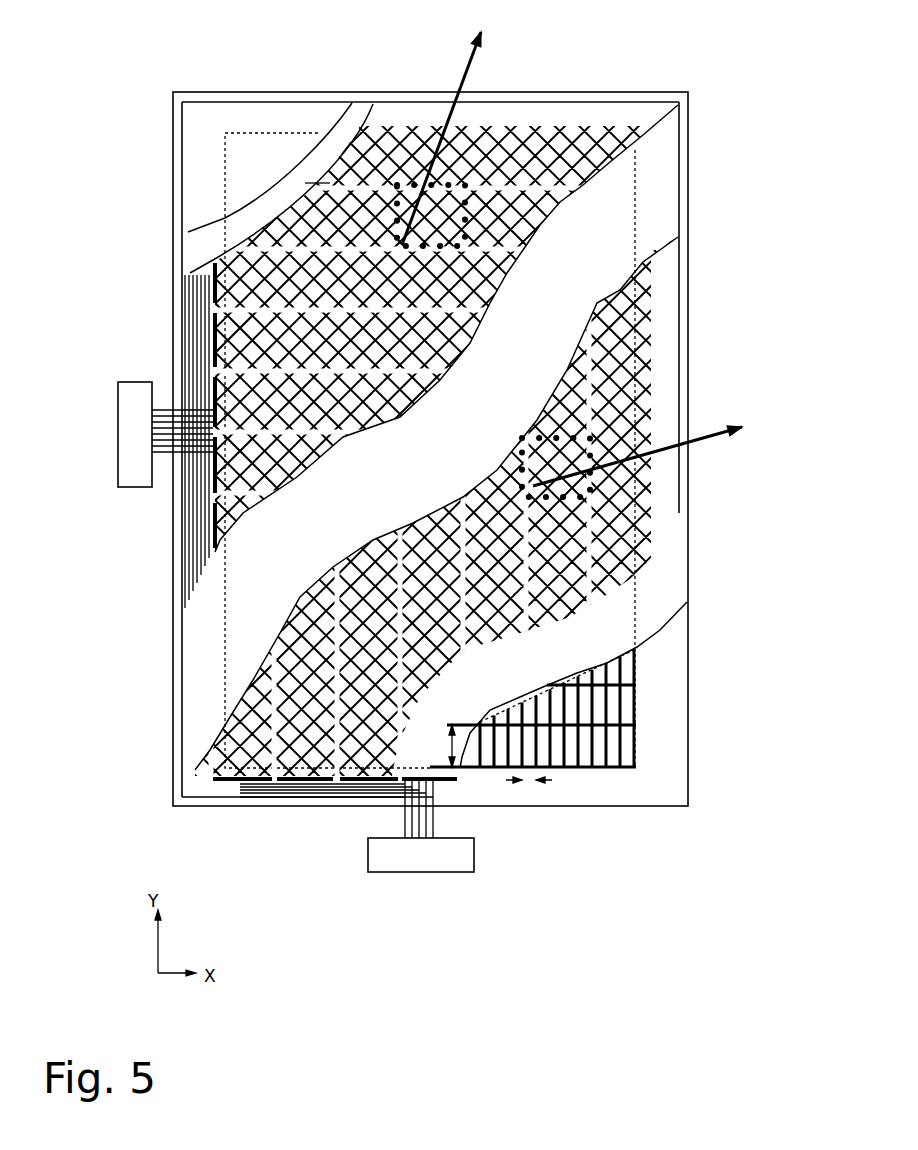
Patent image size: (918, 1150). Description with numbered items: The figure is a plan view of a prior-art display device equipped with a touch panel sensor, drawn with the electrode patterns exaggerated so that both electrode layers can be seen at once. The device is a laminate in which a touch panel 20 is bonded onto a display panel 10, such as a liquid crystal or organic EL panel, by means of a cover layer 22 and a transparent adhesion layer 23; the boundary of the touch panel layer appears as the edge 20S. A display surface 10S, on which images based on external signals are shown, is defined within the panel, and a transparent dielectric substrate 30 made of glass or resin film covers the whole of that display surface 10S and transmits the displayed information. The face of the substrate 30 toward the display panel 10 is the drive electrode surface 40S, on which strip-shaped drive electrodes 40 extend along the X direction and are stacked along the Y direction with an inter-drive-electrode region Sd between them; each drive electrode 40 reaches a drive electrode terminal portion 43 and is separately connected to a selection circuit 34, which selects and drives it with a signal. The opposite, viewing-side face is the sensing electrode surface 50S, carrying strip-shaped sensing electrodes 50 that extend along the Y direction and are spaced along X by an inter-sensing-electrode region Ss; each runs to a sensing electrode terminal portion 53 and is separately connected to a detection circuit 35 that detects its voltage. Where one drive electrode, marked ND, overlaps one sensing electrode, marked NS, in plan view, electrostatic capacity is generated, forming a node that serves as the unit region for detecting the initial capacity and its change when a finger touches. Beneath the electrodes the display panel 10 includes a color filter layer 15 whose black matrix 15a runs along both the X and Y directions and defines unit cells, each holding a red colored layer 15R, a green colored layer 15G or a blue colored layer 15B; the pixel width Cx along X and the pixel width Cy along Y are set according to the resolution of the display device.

The display panel 10 is at (692, 766).
The display surface 10S is at (657, 458).
The color filter layer 15 is at (637, 665).
The black matrix 15a is at (624, 705).
The red colored layer 15R is at (595, 769).
The green colored layer 15G is at (609, 769).
The blue colored layer 15B is at (623, 769).
The touch panel 20 is at (393, 101).
The first electrode layer edge 20S is at (219, 110).
The cover layer 22 is at (320, 102).
The transparent adhesion layer 23 is at (355, 104).
The transparent dielectric substrate 30 is at (688, 194).
The selection circuit 34 is at (134, 382).
The detection circuit 35 is at (474, 856).
The drive electrode 40 is at (490, 120).
The drive electrode surface 40S is at (602, 102).
The drive electrode terminal portion 43 is at (186, 283).
The sensing electrode 50 is at (655, 412).
The sensing electrode surface 50S is at (679, 505).
The sensing electrode terminal portion 53 is at (353, 820).
The inter-drive-electrode region Sd is at (305, 184).
The inter-sensing-electrode region Ss is at (593, 330).
The drive electrode ND is at (445, 127).
The sensing electrode NS is at (651, 455).
The pixel width along the X direction Cx is at (529, 795).
The pixel width along the Y direction Cy is at (441, 746).